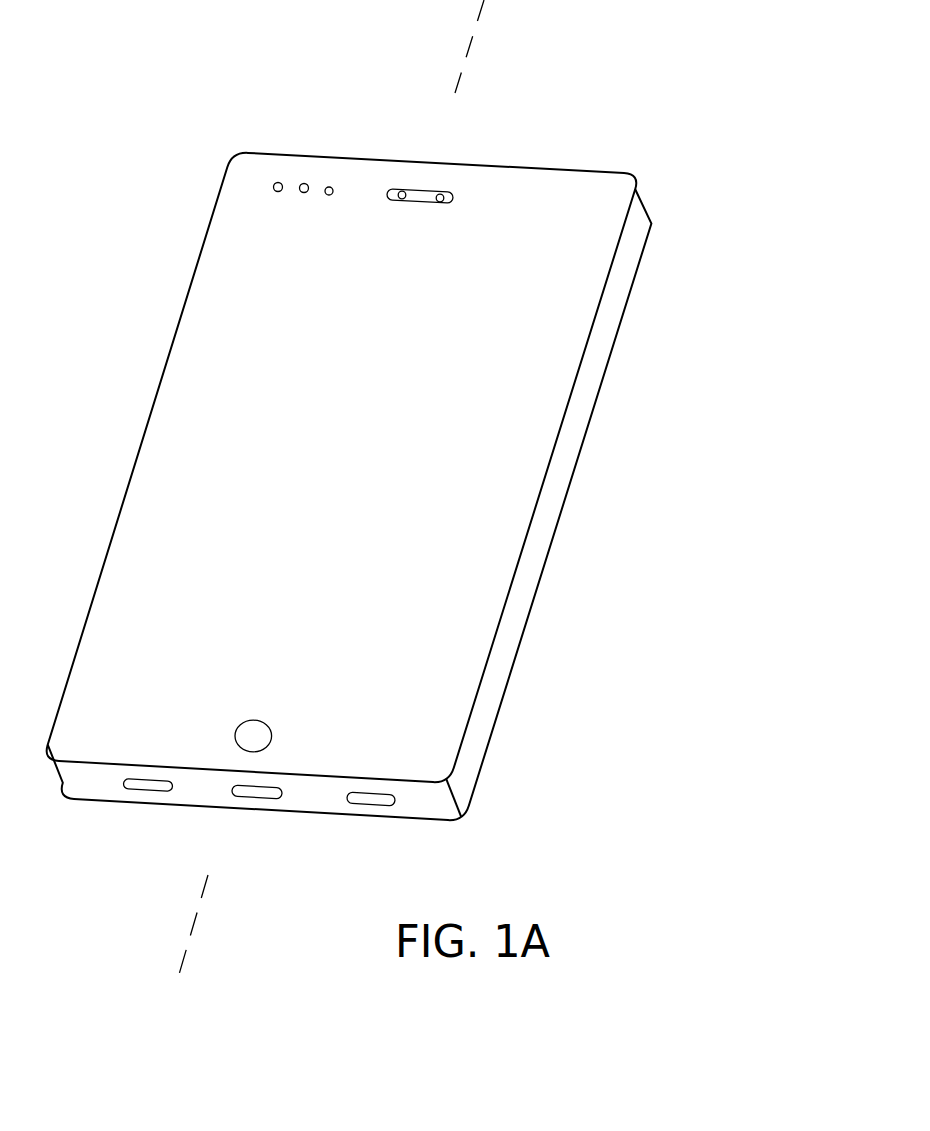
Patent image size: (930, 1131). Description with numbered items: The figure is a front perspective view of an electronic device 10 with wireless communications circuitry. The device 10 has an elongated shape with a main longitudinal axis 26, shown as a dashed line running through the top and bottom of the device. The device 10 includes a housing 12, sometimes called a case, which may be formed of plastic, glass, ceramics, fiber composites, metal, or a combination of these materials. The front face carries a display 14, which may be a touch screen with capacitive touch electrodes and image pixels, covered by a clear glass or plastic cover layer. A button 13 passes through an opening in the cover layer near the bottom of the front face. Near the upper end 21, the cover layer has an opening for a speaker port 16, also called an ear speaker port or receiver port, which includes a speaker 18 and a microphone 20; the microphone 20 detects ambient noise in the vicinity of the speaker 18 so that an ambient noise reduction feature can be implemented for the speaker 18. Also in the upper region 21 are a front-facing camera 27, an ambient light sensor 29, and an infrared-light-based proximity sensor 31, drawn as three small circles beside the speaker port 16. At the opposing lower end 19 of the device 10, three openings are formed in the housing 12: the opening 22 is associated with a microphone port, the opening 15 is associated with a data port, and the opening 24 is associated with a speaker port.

The electronic device 10 is at (394, 439).
The housing 12 is at (638, 230).
The button 13 is at (272, 737).
The display 14 is at (188, 505).
The opening 15 is at (265, 801).
The speaker port 16 is at (434, 189).
The speaker 18 is at (402, 191).
The lower end 19 is at (335, 798).
The microphone 20 is at (440, 194).
The upper end 21 is at (263, 171).
The opening 22 is at (141, 791).
The opening 24 is at (378, 805).
The longitudinal axis 26 is at (475, 40).
The front-facing camera 27 is at (281, 182).
The ambient light sensor 29 is at (306, 183).
The infrared-light-based proximity sensor 31 is at (332, 187).